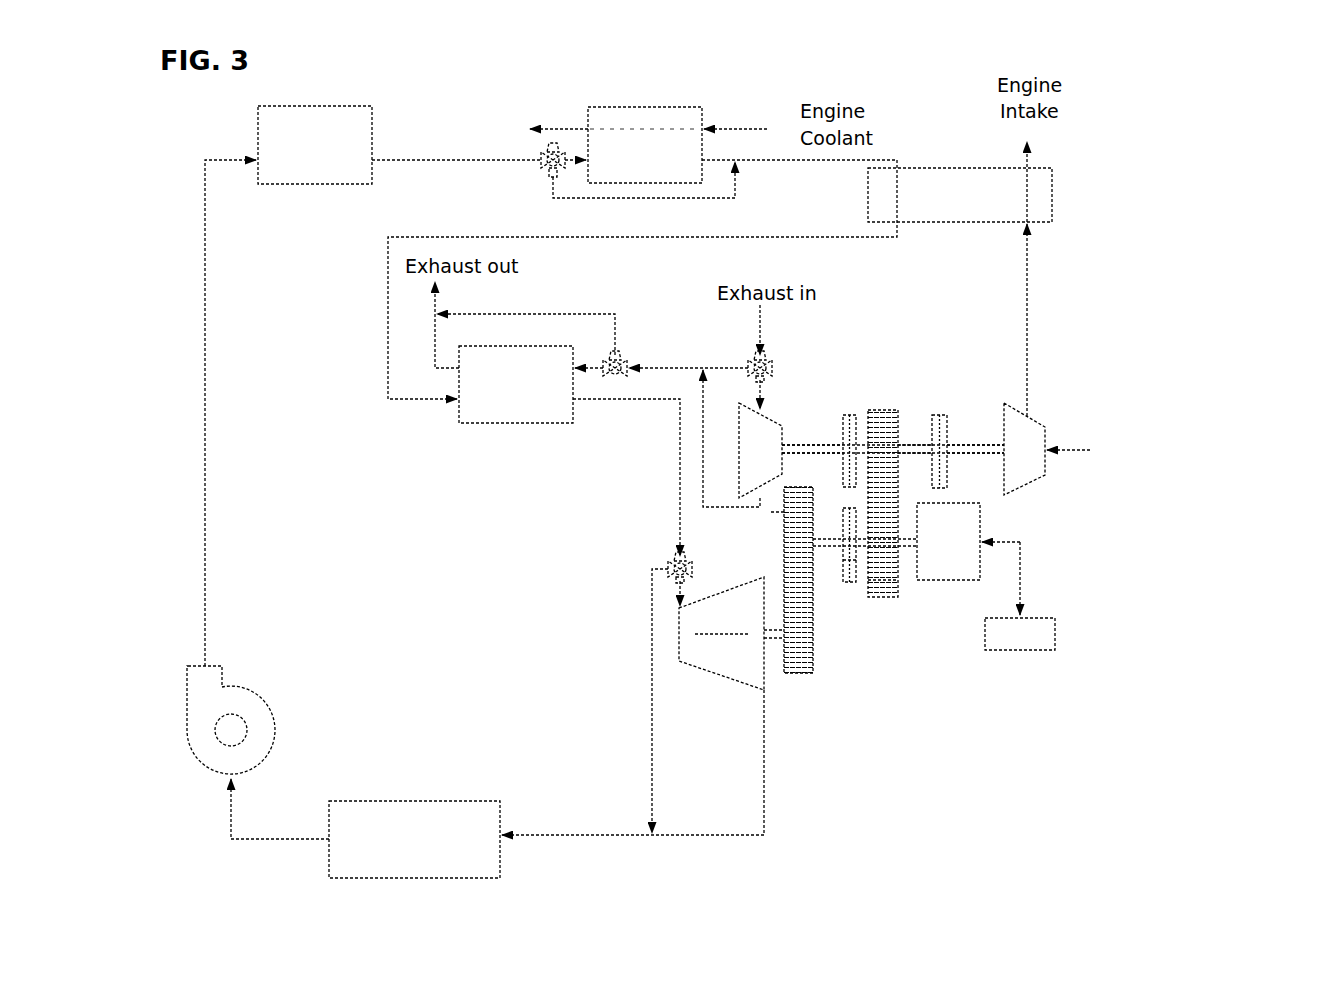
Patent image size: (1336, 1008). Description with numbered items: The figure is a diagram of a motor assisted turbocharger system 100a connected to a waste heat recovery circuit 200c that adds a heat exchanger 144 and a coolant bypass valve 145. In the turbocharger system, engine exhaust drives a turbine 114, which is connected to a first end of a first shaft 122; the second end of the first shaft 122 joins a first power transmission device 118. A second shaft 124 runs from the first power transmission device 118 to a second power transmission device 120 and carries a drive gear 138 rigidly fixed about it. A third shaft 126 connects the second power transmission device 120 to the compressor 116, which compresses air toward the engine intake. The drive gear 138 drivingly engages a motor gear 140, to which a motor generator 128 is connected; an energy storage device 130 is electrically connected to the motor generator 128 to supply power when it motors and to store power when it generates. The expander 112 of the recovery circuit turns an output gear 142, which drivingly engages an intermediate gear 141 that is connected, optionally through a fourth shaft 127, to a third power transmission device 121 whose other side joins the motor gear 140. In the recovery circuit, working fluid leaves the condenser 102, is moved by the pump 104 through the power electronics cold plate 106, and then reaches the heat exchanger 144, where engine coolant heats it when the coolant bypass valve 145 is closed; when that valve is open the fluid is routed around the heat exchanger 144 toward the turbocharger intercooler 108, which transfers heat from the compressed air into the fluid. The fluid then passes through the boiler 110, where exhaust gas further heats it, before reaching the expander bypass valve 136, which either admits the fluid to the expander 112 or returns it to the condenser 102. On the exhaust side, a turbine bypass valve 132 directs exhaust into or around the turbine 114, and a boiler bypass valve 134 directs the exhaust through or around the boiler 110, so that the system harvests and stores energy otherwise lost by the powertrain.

The motor assisted turbocharger system 100a is at (1178, 219).
The waste heat recovery circuit 200c is at (453, 131).
The condenser 102 is at (428, 801).
The pump 104 is at (273, 728).
The power electronics cold plate 106 is at (312, 184).
The turbocharger intercooler 108 is at (1052, 200).
The boiler 110 is at (520, 423).
The expander 112 is at (738, 684).
The turbine 114 is at (733, 435).
The compressor 116 is at (1045, 428).
The first power transmission device 118 is at (850, 415).
The second power transmission device 120 is at (945, 415).
The third power transmission device 121 is at (848, 582).
The first shaft 122 is at (808, 445).
The second shaft 124 is at (918, 445).
The third shaft 126 is at (982, 445).
The fourth shaft 127 is at (843, 537).
The motor generator 128 is at (980, 515).
The energy storage device 130 is at (1055, 632).
The turbine bypass valve 132 is at (750, 355).
The boiler bypass valve 134 is at (622, 355).
The expander bypass valve 136 is at (693, 568).
The drive gear 138 is at (890, 410).
The motor gear 140 is at (898, 585).
The intermediate gear 141 is at (770, 512).
The output gear 142 is at (812, 660).
The heat exchanger 144 is at (683, 107).
The coolant bypass valve 145 is at (548, 165).